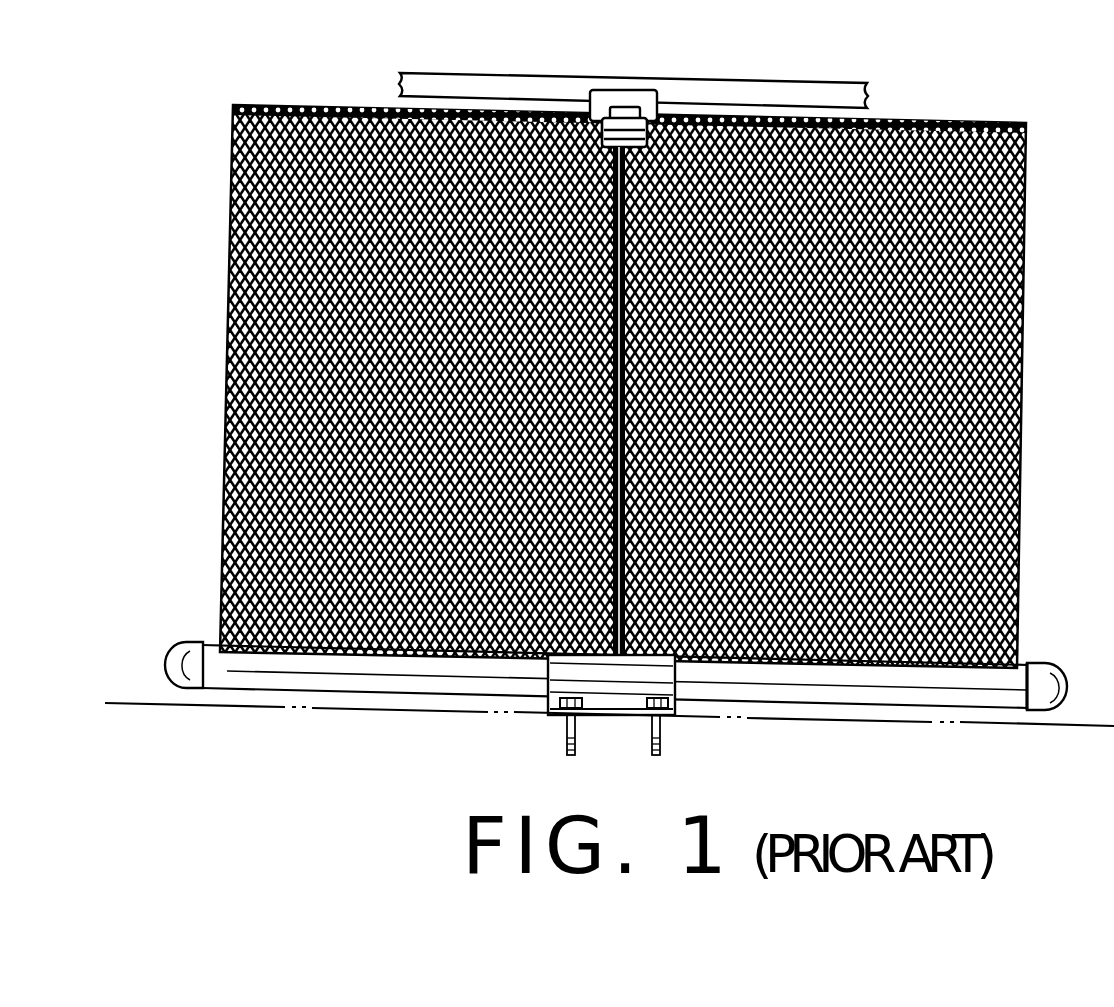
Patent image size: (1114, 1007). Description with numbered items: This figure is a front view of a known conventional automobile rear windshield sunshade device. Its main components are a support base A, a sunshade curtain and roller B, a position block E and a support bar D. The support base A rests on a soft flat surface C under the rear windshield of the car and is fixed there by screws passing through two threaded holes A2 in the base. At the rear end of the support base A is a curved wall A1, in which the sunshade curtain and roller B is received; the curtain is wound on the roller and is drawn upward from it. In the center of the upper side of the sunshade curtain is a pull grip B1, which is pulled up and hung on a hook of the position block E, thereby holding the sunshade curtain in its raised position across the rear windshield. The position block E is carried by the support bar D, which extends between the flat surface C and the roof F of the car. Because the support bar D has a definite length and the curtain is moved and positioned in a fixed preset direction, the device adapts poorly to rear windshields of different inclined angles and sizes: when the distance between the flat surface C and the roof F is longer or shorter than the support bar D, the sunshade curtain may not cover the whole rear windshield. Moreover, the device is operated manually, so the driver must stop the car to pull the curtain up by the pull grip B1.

The support base A is at (598, 687).
The curved wall A1 is at (543, 682).
The threaded holes A2 is at (663, 725).
The sunshade curtain and roller B is at (1025, 329).
The pull grip B1 is at (622, 118).
The flat surface C is at (1037, 727).
The support bar D is at (677, 120).
The position block E is at (602, 102).
The roof F is at (710, 90).